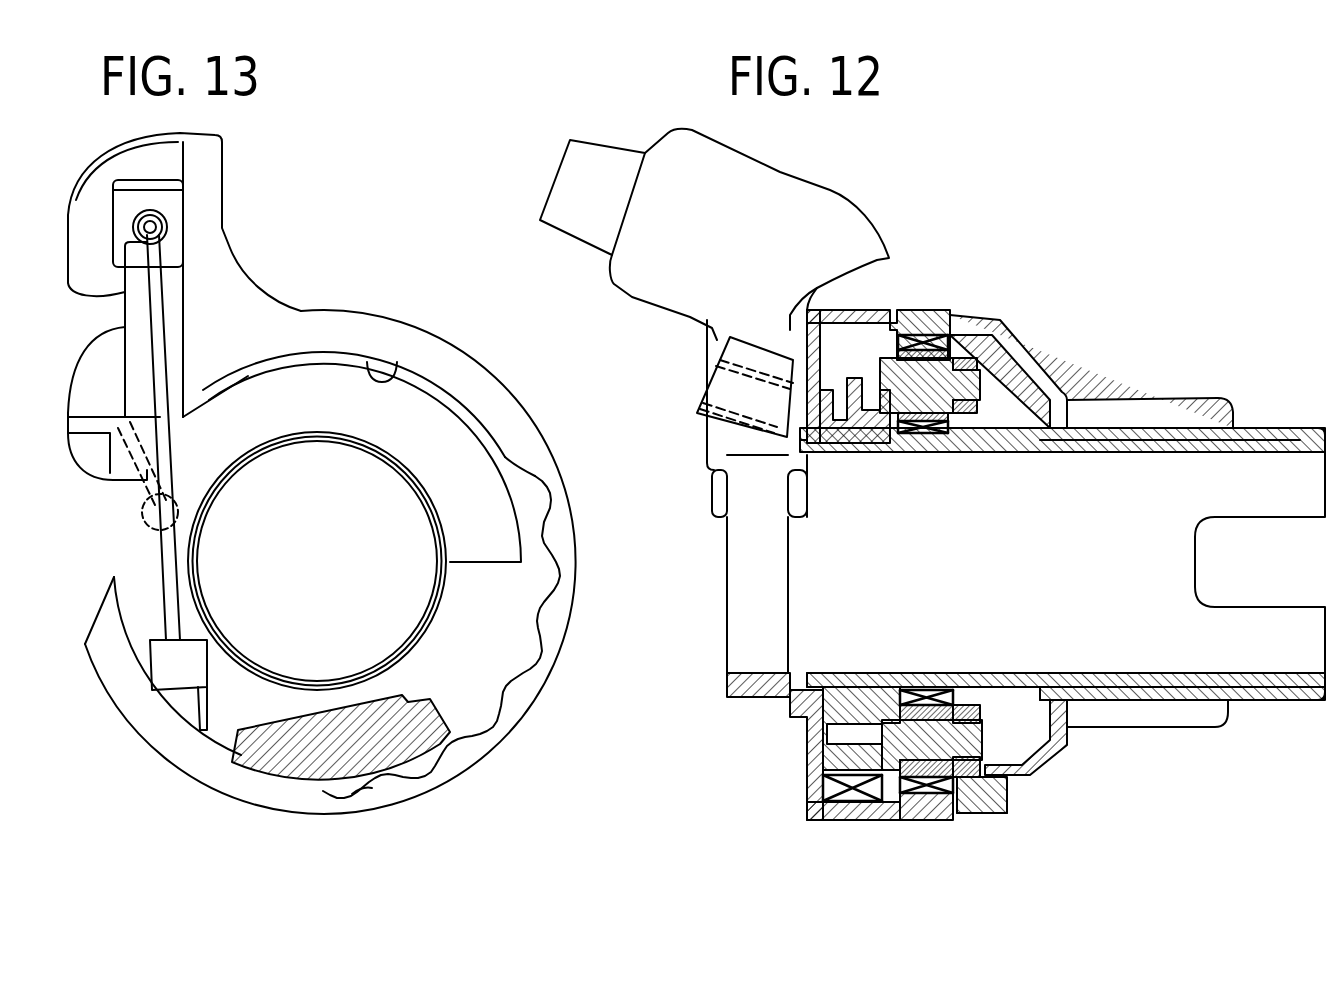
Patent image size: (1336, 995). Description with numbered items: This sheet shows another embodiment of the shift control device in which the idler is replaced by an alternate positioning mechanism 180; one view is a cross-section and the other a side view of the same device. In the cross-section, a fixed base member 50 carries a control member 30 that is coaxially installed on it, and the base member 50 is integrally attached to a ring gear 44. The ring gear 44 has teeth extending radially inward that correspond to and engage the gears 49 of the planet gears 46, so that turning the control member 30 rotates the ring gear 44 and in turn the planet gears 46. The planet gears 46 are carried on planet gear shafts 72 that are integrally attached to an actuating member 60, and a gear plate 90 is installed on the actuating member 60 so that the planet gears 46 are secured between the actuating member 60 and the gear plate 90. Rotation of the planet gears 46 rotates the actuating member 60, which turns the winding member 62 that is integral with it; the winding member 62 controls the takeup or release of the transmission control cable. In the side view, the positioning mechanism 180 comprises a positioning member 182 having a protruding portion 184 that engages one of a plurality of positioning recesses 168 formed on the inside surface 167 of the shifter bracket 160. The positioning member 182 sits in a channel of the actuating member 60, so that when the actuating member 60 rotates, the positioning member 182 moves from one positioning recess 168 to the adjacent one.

In FIG. 12, the control member 30 is at (1250, 703).
In FIG. 12, the ring gear 44 is at (915, 821).
In FIG. 12, the planet gears 46 is at (1002, 810).
In FIG. 12, the gears of the planet gears 49 is at (955, 816).
In FIG. 12, the base member 50 is at (1198, 676).
In FIG. 13, the actuating member 60 is at (472, 680).
In FIG. 12, the actuating member 60 is at (822, 752).
In FIG. 12, the winding member 62 is at (850, 382).
In FIG. 12, the planet gear shafts 72 is at (1040, 752).
In FIG. 12, the gear plate 90 is at (966, 362).
In FIG. 13, the shifter bracket 160 is at (172, 752).
In FIG. 12, the shifter bracket 160 is at (745, 635).
In FIG. 13, the inside surface 167 is at (375, 380).
In FIG. 13, the positioning recesses 168 is at (548, 550).
In FIG. 12, the positioning mechanism 180 is at (847, 817).
In FIG. 13, the positioning member 182 is at (270, 750).
In FIG. 13, the protruding portion 184 is at (345, 798).